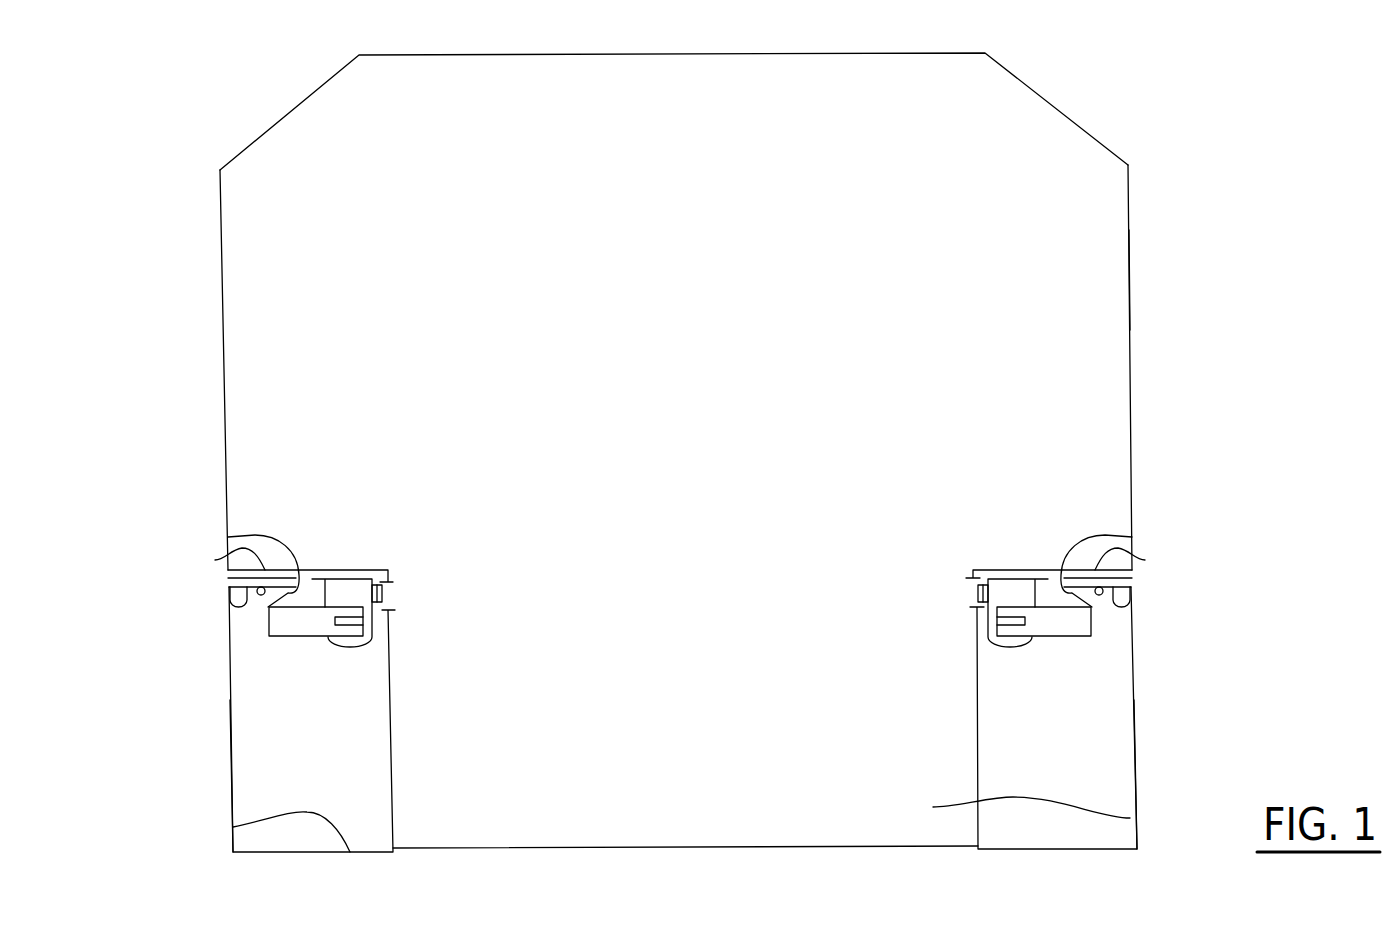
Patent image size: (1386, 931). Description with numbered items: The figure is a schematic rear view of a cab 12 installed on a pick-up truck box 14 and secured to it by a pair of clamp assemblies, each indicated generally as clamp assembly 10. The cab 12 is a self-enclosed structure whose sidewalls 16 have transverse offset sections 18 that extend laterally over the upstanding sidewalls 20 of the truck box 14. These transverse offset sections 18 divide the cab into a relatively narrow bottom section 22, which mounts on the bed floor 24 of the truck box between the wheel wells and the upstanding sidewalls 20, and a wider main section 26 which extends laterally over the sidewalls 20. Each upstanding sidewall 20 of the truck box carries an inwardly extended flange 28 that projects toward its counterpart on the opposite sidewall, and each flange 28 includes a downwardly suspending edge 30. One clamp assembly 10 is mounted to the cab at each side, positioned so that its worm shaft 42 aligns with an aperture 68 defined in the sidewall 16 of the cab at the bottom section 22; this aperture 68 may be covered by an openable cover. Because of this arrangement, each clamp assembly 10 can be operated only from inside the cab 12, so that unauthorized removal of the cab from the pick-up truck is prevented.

The clamp assembly 10 is at (250, 623).
The cab 12 is at (1131, 205).
The pick-up truck box 14 is at (232, 767).
The sidewalls 16 is at (223, 328).
The transverse offset sections 18 is at (215, 560).
The upstanding sidewalls 20 is at (232, 700).
The bottom section 22 is at (1130, 818).
The bed floor 24 is at (233, 827).
The main section 26 is at (1103, 277).
The inwardly extended flange 28 is at (229, 597).
The downwardly suspending edge 30 is at (228, 537).
The worm shaft 42 is at (387, 590).
The aperture 68 is at (387, 600).